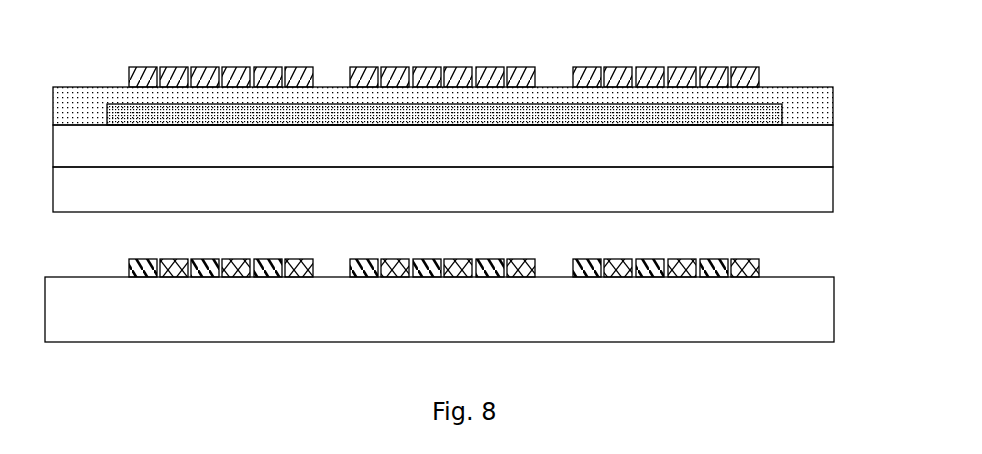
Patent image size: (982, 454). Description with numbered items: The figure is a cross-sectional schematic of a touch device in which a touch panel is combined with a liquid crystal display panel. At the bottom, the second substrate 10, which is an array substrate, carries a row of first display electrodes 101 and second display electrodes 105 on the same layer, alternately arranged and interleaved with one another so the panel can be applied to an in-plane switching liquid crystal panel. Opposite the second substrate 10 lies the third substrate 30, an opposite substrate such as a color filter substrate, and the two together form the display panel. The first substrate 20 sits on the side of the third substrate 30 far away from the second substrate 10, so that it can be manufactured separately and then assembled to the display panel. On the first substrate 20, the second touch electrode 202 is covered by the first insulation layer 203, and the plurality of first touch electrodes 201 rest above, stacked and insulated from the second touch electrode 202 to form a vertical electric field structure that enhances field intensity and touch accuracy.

The second substrate 10 is at (817, 313).
The first display electrode 101 is at (592, 275).
The second display electrode 105 is at (462, 275).
The first substrate 20 is at (815, 148).
The third substrate 30 is at (823, 180).
The first touch electrode 201 is at (298, 67).
The second touch electrode 202 is at (568, 112).
The first insulation layer 203 is at (113, 95).